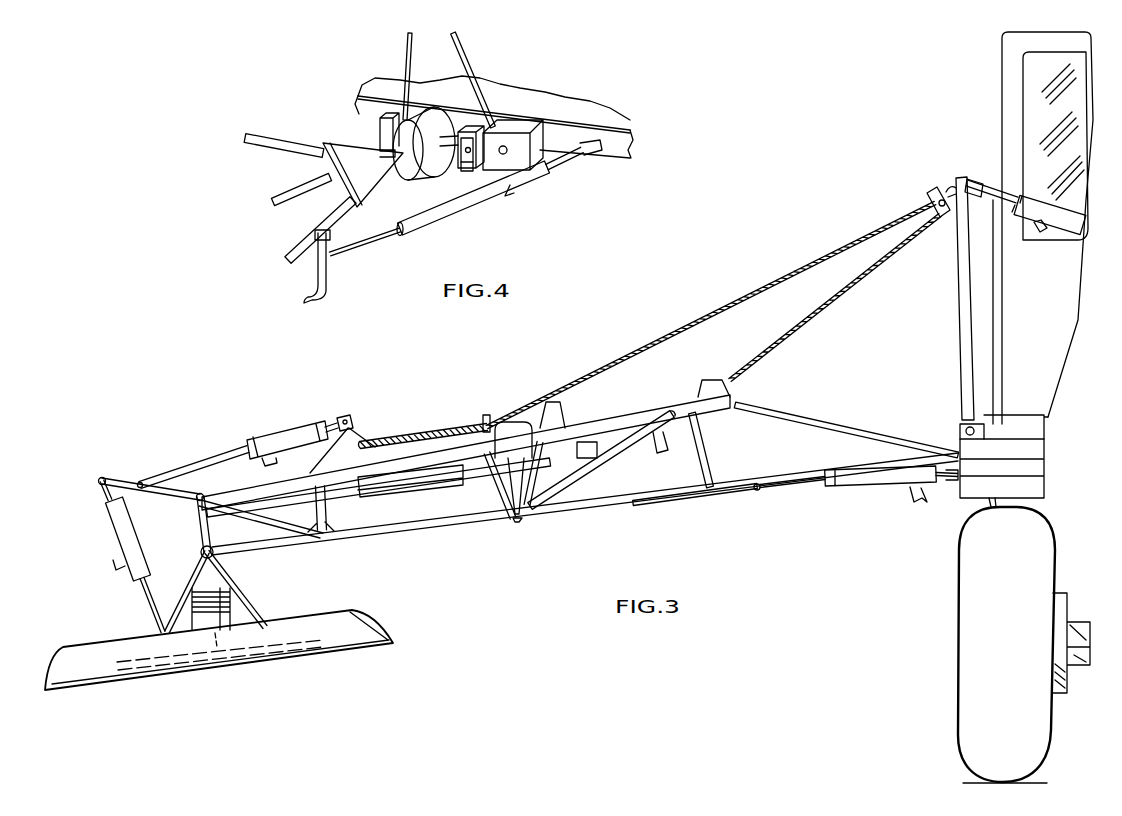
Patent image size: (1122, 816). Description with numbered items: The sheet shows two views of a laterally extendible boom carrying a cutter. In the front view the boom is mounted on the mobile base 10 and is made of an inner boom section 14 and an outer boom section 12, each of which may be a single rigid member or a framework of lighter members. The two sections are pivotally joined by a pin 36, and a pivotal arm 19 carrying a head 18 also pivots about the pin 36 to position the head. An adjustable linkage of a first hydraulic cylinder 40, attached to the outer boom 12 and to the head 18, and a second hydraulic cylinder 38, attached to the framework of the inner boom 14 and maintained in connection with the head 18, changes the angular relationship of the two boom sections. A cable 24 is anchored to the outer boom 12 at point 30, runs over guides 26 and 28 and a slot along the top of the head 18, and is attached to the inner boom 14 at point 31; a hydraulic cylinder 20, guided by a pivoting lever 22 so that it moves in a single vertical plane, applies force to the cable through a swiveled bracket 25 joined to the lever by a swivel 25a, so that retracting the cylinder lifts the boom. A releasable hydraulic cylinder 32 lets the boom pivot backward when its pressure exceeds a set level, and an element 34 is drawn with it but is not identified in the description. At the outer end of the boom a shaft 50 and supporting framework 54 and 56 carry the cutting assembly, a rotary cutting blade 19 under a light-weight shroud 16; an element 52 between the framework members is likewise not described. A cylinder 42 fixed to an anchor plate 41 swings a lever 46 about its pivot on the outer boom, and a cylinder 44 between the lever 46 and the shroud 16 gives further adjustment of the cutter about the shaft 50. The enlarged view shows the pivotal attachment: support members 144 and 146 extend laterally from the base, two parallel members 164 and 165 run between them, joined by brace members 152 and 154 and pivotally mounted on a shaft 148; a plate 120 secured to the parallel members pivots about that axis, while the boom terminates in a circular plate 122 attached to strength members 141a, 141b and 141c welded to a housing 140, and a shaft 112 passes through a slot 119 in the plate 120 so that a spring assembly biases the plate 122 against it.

In FIG. 3, the tractor 10 is at (1004, 110).
In FIG. 3, the outer boom section 12 is at (404, 540).
In FIG. 3, the inner boom section 14 is at (599, 519).
In FIG. 3, the shroud 16 is at (337, 645).
In FIG. 3, the head 18 is at (515, 422).
In FIG. 3, the rotary cutting blade / pivotal arm 19 is at (512, 500).
In FIG. 3, the hydraulic cylinder 20 is at (1062, 226).
In FIG. 3, the pivoting lever 22 is at (962, 258).
In FIG. 4, the pivoting lever 22 is at (478, 52).
In FIG. 3, the cable 24 is at (748, 296).
In FIG. 3, the swiveled bracket 25 is at (933, 192).
In FIG. 3, the swivel 25a is at (948, 186).
In FIG. 3, the guide 26 is at (558, 418).
In FIG. 3, the guide 28 is at (482, 425).
In FIG. 3, the anchor point 30 is at (375, 433).
In FIG. 3, the attachment point 31 is at (718, 380).
In FIG. 3, the releasable hydraulic cylinder 32 is at (866, 486).
In FIG. 4, the releasable hydraulic cylinder 32 is at (462, 216).
In FIG. 3, the piston rod 34 is at (707, 492).
In FIG. 4, the piston rod 34 is at (333, 286).
In FIG. 3, the pin 36 is at (518, 520).
In FIG. 3, the second hydraulic cylinder 38 is at (622, 440).
In FIG. 3, the first hydraulic cylinder 40 is at (398, 497).
In FIG. 3, the anchor plate 41 is at (352, 430).
In FIG. 3, the hydraulic cylinder 42 is at (287, 435).
In FIG. 3, the hydraulic cylinder 44 is at (113, 527).
In FIG. 3, the lever 46 is at (125, 480).
In FIG. 3, the shaft 50 is at (201, 550).
In FIG. 3, the spring 52 is at (237, 612).
In FIG. 3, the supporting framework 54 is at (237, 580).
In FIG. 3, the supporting framework 56 is at (192, 574).
In FIG. 4, the shaft 112 is at (421, 82).
In FIG. 4, the slot 119 is at (443, 120).
In FIG. 4, the plate 120 is at (420, 185).
In FIG. 4, the circular plate 122 is at (403, 182).
In FIG. 4, the housing 140 is at (336, 150).
In FIG. 4, the boom strength member 141a is at (275, 142).
In FIG. 4, the boom strength member 141b is at (318, 224).
In FIG. 4, the boom strength member 141c is at (276, 195).
In FIG. 4, the support member 144 is at (570, 128).
In FIG. 4, the support member 146 is at (380, 130).
In FIG. 4, the shaft 148 is at (534, 118).
In FIG. 4, the brace member 152 is at (520, 183).
In FIG. 4, the brace member 154 is at (470, 175).
In FIG. 4, the parallel member 164 is at (478, 124).
In FIG. 4, the parallel member 165 is at (472, 168).